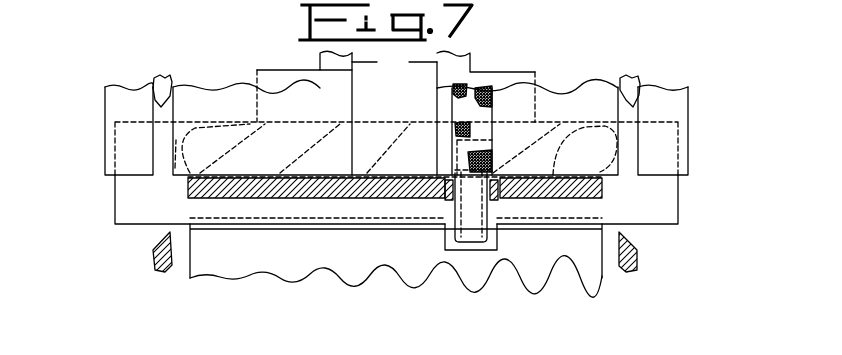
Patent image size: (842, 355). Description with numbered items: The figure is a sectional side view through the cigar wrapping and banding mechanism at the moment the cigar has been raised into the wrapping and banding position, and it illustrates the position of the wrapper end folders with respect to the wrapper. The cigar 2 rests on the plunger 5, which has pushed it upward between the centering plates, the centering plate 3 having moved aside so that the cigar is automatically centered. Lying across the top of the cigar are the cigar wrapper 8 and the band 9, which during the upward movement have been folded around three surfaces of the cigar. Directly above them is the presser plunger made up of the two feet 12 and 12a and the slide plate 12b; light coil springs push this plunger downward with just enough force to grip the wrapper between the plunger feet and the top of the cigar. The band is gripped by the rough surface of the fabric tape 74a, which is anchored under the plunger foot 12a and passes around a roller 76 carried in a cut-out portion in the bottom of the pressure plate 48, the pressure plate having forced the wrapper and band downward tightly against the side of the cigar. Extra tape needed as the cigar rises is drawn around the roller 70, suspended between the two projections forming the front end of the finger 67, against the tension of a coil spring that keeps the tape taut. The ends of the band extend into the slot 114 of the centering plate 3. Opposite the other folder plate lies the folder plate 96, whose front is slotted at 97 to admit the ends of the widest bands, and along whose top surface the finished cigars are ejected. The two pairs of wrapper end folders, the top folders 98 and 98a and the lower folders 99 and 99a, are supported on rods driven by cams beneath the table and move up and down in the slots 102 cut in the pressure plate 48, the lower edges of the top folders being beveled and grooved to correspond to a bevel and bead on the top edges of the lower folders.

The cigars 2 is at (412, 128).
The centering plate 3 is at (350, 277).
The plunger 5 is at (190, 203).
The cigar wrapper 8 is at (382, 123).
The band 9 is at (452, 128).
The plunger foot 12 is at (297, 75).
The plunger foot 12a is at (490, 72).
The slide plate 12b is at (394, 64).
The pressure plate 48 is at (202, 88).
The finger 67 is at (499, 198).
The roller 70 is at (464, 202).
The fabric tape 74a is at (492, 103).
The roller 76 is at (473, 147).
The folder plate 96 is at (293, 199).
The slot 97 is at (445, 200).
The top folder 98 is at (160, 94).
The top folder 98a is at (633, 95).
The lower folder 99 is at (153, 254).
The lower folder 99a is at (640, 258).
The slots 102 is at (158, 133).
The slot 114 is at (497, 240).